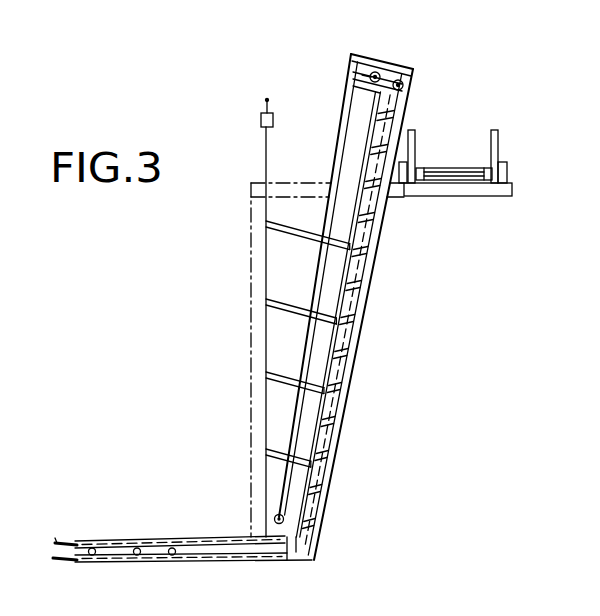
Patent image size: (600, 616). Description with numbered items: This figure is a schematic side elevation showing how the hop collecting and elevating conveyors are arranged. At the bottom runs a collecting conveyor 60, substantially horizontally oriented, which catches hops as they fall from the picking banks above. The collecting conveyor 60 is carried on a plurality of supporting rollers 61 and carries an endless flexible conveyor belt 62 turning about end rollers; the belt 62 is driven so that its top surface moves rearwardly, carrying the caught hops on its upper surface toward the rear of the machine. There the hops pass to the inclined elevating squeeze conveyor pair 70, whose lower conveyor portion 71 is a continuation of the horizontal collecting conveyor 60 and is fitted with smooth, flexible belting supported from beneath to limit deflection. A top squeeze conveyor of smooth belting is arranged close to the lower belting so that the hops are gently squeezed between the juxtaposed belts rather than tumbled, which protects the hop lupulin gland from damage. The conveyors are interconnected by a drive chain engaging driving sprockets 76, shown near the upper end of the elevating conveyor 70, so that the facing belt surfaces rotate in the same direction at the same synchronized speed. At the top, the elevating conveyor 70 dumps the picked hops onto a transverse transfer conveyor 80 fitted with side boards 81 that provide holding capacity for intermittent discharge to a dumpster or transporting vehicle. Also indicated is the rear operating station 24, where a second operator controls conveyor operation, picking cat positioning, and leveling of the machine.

The rear operating station 24 is at (273, 121).
The collecting conveyor 60 is at (143, 533).
The supporting rollers 61 is at (176, 554).
The conveyor belt 62 is at (185, 542).
The elevating squeeze conveyor pair 70 is at (296, 402).
The lower conveyor portion 71 is at (350, 374).
The driving sprockets 76 is at (380, 73).
The transverse transfer conveyor 80 is at (428, 168).
The side boards 81 is at (412, 131).